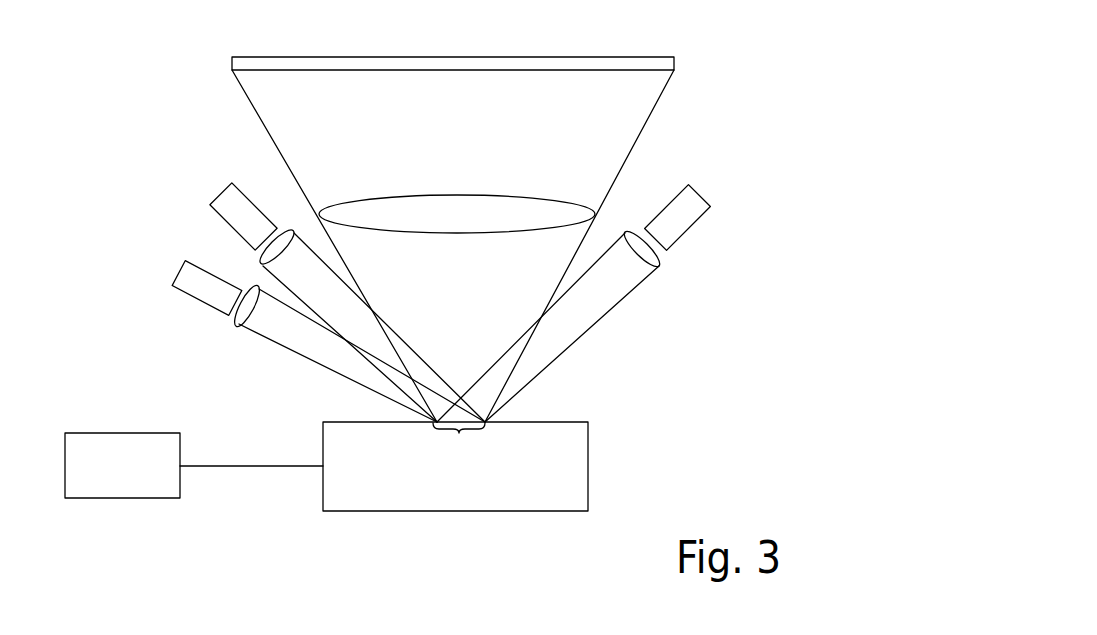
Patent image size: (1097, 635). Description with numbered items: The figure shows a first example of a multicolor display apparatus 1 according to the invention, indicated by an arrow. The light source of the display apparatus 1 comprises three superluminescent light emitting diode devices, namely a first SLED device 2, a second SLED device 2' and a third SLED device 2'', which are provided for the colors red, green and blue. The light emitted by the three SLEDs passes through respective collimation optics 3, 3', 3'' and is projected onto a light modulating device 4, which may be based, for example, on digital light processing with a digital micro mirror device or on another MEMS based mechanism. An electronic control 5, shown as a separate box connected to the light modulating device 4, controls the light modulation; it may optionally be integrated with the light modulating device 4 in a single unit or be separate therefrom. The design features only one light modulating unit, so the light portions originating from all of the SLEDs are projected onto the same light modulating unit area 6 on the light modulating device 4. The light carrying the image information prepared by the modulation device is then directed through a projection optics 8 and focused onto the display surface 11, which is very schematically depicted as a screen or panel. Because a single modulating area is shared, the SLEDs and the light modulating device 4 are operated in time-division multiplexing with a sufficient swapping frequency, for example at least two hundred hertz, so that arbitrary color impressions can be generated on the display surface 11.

The display apparatus 1 is at (704, 266).
The superluminescent light emitting diode 2 is at (206, 216).
The SLED device 2' is at (166, 288).
The SLED device 2'' is at (735, 200).
The collimating optics 3 is at (347, 270).
The collimation optics 3' is at (313, 352).
The collimation optics 3'' is at (606, 324).
The light modulating device 4 is at (577, 448).
The electronic control 5 is at (117, 457).
The light modulating unit area 6 is at (459, 443).
The projection optics 8 is at (516, 209).
The display surface 11 is at (653, 64).